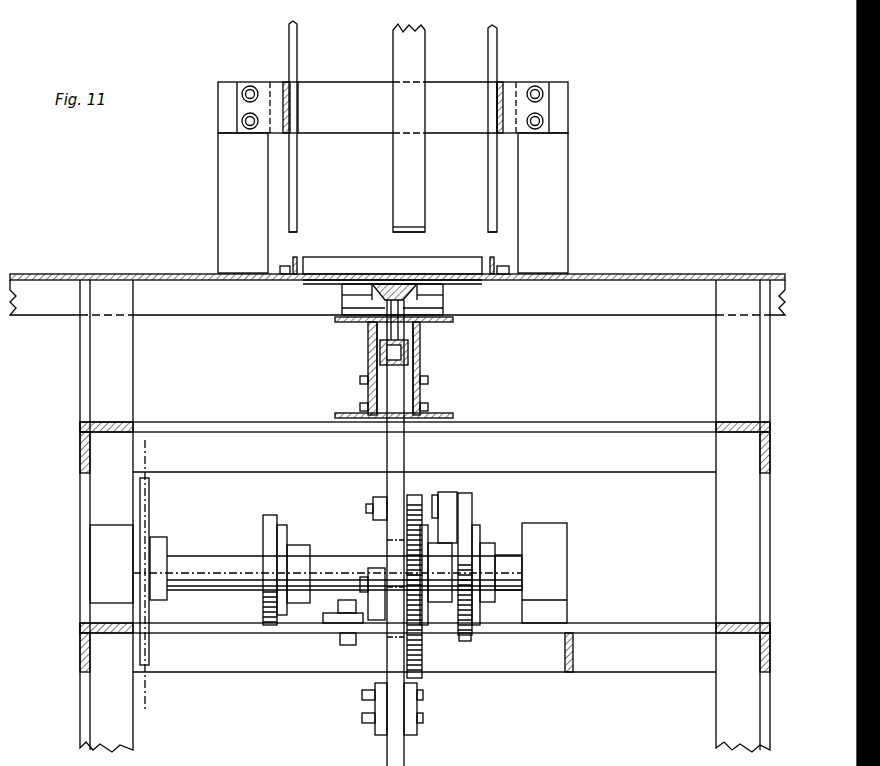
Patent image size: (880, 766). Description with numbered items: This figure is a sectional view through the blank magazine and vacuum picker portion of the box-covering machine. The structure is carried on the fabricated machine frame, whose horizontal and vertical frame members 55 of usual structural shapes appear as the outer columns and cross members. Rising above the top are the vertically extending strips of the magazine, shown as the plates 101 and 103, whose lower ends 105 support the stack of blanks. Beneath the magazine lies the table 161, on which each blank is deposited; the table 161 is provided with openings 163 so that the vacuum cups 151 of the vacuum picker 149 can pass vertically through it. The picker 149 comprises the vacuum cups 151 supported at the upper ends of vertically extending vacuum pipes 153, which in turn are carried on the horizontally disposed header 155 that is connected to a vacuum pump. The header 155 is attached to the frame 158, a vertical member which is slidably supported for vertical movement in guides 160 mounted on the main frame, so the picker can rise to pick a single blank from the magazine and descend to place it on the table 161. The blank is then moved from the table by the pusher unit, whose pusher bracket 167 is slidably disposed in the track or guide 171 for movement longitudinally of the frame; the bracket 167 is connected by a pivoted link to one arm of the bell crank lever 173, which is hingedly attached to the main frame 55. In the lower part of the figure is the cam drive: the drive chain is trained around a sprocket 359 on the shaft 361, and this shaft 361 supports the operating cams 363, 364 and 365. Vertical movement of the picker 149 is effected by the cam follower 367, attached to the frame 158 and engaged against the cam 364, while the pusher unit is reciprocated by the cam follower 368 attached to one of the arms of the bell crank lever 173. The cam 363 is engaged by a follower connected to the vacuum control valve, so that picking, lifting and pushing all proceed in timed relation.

The frame members 55 is at (558, 172).
The knife plate 101 is at (507, 56).
The plates 103 is at (298, 62).
The plate lower ends 105 is at (299, 228).
The vacuum picker 149 is at (405, 370).
The vacuum cups 151 is at (420, 286).
The vacuum pipes 153 is at (398, 330).
The header 155 is at (408, 355).
The frame 158 is at (387, 480).
The guides 160 is at (365, 390).
The table 161 is at (600, 274).
The openings 163 is at (396, 284).
The pusher bracket 167 is at (373, 256).
The track or guide 171 is at (443, 298).
The bell crank lever 173 is at (448, 498).
The sprocket 359 is at (149, 504).
The shaft 361 is at (343, 565).
The cam 363 is at (263, 531).
The cam 364 is at (420, 655).
The cam 365 is at (466, 641).
The cam follower 367 is at (418, 495).
The cam follower 368 is at (472, 510).